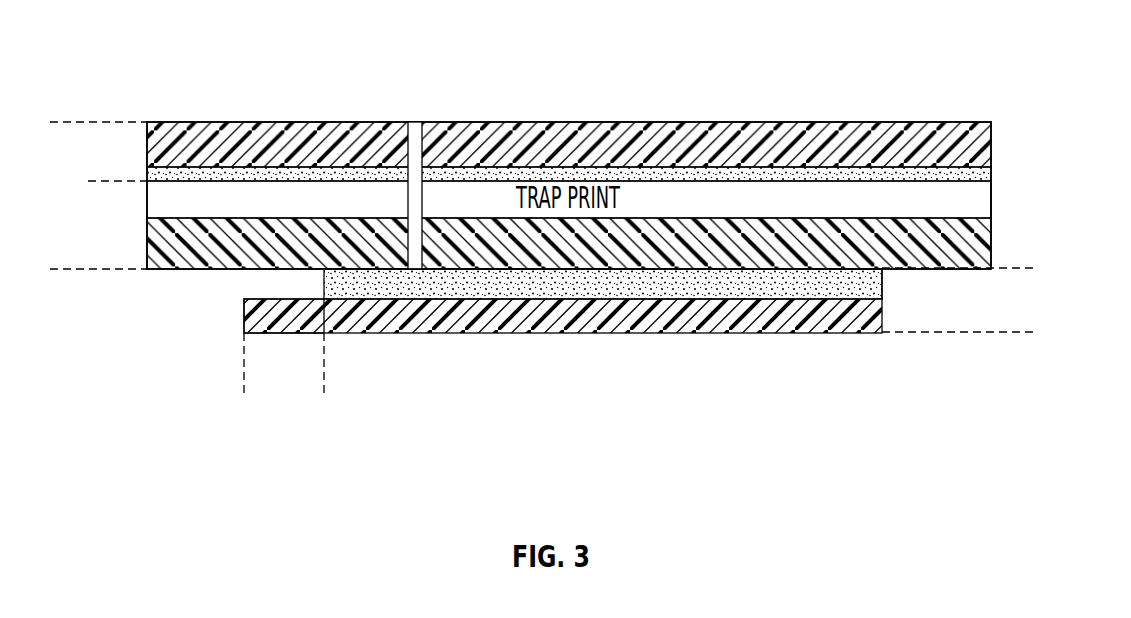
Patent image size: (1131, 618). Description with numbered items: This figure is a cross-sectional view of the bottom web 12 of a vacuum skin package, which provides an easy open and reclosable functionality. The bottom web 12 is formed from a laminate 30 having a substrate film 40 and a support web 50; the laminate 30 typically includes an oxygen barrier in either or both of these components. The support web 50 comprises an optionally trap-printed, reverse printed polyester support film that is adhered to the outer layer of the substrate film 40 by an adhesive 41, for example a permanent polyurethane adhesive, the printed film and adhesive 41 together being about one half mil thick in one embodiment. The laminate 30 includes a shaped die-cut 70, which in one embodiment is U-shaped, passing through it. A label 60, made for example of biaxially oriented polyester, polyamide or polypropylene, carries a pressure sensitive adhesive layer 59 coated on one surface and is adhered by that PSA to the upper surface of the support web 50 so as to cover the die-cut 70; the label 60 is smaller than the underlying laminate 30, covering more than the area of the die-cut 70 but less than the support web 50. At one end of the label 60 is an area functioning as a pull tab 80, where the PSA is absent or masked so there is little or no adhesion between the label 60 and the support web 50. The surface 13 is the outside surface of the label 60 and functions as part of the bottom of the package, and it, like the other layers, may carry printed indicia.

The bottom web 12 is at (927, 78).
The outside surface of label 13 is at (603, 333).
The laminate 30 is at (54, 122).
The substrate film 40 is at (147, 150).
The adhesive 41 is at (991, 174).
The support web 50 is at (96, 181).
The pressure sensitive adhesive layer 59 is at (882, 285).
The label 60 is at (1033, 268).
The shaped die-cut 70 is at (413, 122).
The pull tab 80 is at (324, 396).